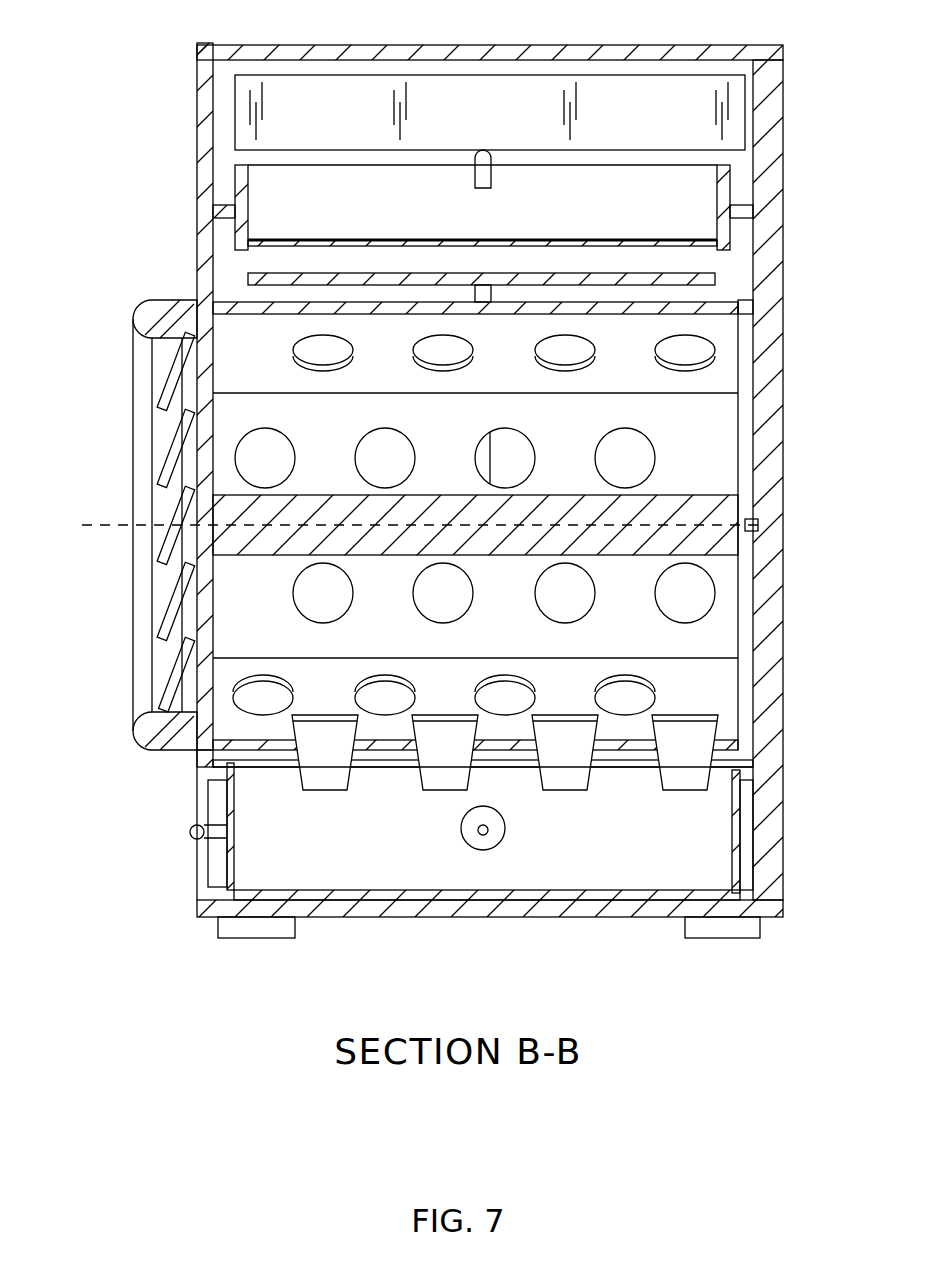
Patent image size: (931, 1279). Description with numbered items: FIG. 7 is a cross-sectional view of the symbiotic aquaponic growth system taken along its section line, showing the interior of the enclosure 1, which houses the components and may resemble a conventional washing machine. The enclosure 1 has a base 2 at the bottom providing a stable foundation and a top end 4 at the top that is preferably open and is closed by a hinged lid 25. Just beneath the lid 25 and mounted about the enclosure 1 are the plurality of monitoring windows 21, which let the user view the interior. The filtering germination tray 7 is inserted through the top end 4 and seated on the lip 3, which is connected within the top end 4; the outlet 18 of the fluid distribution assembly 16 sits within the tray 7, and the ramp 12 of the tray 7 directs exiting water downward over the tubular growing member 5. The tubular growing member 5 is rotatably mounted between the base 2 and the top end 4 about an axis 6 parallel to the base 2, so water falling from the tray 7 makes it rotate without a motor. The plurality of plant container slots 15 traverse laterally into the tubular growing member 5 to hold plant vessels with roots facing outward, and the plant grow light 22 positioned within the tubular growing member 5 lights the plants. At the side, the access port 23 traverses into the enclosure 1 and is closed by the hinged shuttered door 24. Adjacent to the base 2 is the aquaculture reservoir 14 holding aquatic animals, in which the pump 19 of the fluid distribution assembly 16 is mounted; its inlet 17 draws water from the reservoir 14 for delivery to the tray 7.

The enclosure 1 is at (176, 165).
The base 2 is at (783, 917).
The lip 3 is at (753, 213).
The top end 4 is at (783, 60).
The tubular growing member 5 is at (705, 302).
The axis 6 is at (82, 525).
The filtering germination tray 7 is at (725, 158).
The ramp 12 is at (258, 258).
The aquaculture reservoir 14 is at (440, 895).
The plurality of plant container slots 15 is at (625, 452).
The fluid distribution assembly 16 is at (456, 812).
The inlet 17 is at (482, 838).
The outlet 18 is at (483, 194).
The pump 19 is at (502, 822).
The plurality of monitoring windows 21 is at (490, 112).
The plant grow light 22 is at (295, 495).
The access port 23 is at (218, 684).
The shuttered door 24 is at (138, 311).
The lid 25 is at (428, 52).